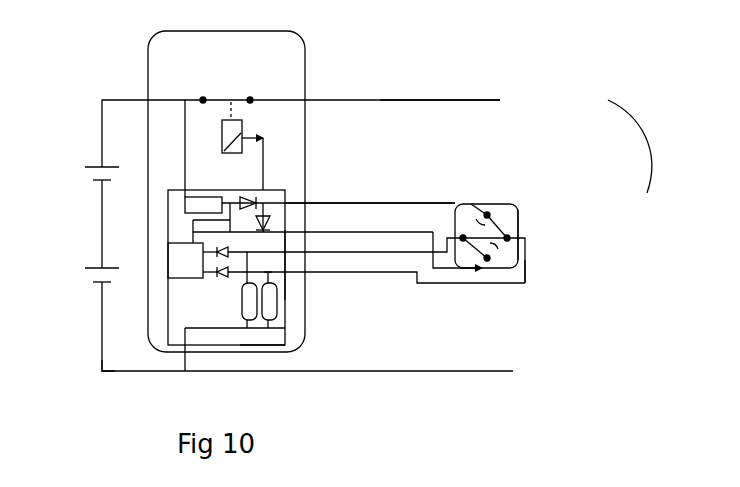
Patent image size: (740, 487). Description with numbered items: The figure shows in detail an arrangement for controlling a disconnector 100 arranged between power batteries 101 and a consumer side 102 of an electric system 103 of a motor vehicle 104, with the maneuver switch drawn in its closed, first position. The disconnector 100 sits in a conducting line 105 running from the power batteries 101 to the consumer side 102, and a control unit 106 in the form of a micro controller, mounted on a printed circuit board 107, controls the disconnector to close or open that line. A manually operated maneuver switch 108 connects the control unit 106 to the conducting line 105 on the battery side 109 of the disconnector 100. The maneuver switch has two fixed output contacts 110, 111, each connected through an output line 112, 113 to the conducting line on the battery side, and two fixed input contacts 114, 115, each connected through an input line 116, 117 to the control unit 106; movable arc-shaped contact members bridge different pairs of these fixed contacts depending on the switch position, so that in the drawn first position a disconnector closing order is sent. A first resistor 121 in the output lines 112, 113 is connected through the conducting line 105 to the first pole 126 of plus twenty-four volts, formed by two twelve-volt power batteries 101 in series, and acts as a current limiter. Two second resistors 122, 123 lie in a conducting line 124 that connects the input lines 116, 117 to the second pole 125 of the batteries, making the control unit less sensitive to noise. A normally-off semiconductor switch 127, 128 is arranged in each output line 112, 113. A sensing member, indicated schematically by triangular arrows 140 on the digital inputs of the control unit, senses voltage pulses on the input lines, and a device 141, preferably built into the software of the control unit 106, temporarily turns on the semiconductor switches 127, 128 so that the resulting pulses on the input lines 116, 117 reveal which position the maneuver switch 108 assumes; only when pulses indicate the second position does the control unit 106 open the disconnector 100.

The disconnector 100 is at (220, 98).
The power batteries 101 is at (88, 280).
The consumer side 102 is at (415, 99).
The electric system 103 is at (480, 127).
The motor vehicle 104 is at (633, 110).
The conducting line 105 is at (147, 97).
The control unit 106 is at (178, 277).
The printed circuit board 107 is at (289, 279).
The maneuver switch 108 is at (520, 224).
The battery side 109 is at (155, 98).
The fixed output contact 110 is at (489, 213).
The fixed output contact 111 is at (487, 258).
The output line 112 is at (347, 202).
The output line 113 is at (365, 228).
The fixed input contact 114 is at (522, 287).
The fixed input contact 115 is at (471, 204).
The input line 116 is at (420, 285).
The input line 117 is at (328, 252).
The first resistor 121 is at (204, 196).
The second resistor 122 is at (278, 346).
The second resistor 123 is at (282, 322).
The conducting line 124 is at (185, 363).
The second pole 125 is at (102, 371).
The first pole 126 is at (108, 100).
The semiconductor switch 127 is at (245, 207).
The semiconductor switch 128 is at (262, 236).
The sensing member 140 is at (220, 270).
The device 141 is at (173, 252).